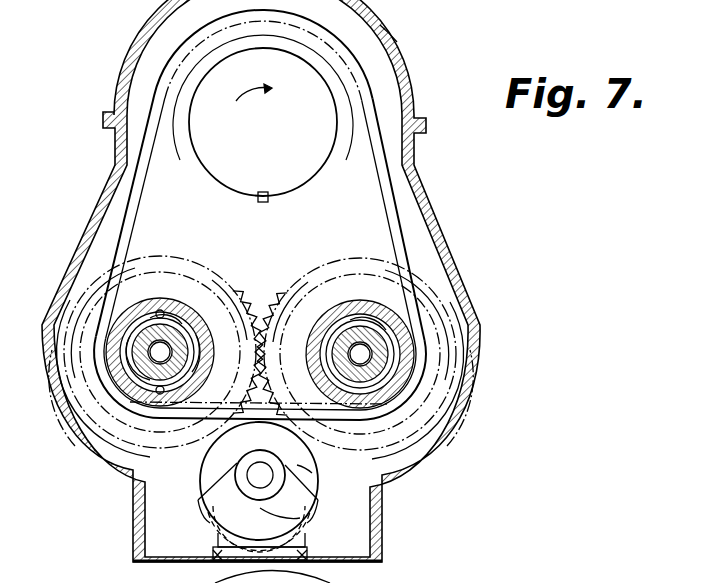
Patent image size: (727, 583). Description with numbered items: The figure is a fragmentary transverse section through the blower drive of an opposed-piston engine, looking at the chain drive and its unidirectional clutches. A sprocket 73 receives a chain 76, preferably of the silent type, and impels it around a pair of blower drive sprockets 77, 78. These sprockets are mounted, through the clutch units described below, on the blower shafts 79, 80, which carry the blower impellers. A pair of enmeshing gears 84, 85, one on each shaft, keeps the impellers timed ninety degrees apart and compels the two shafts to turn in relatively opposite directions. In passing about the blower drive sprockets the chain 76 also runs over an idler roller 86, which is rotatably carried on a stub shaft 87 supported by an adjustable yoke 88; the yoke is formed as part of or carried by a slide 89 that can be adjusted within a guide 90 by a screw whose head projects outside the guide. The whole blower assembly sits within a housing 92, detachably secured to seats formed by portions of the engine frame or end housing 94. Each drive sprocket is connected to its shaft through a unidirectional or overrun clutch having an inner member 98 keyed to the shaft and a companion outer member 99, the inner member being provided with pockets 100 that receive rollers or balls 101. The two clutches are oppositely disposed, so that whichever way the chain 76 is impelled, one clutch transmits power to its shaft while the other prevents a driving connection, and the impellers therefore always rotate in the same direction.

The sprocket 73 is at (336, 83).
The chain 76 is at (392, 218).
The blower drive sprocket 77 is at (160, 293).
The blower drive sprocket 78 is at (356, 297).
The blower shaft 79 is at (180, 317).
The blower shaft 80 is at (401, 354).
The gear 84 is at (253, 304).
The gear 85 is at (278, 294).
The idler roller 86 is at (316, 478).
The stub shaft 87 is at (252, 475).
The adjustable yoke 88 is at (308, 517).
The slide 89 is at (214, 540).
The guide 90 is at (310, 554).
The housing 92 is at (451, 248).
The end housing 94 is at (397, 42).
The inner member 98 is at (150, 382).
The outer member 99 is at (207, 362).
The pocket 100 is at (170, 392).
The roller 101 is at (157, 392).